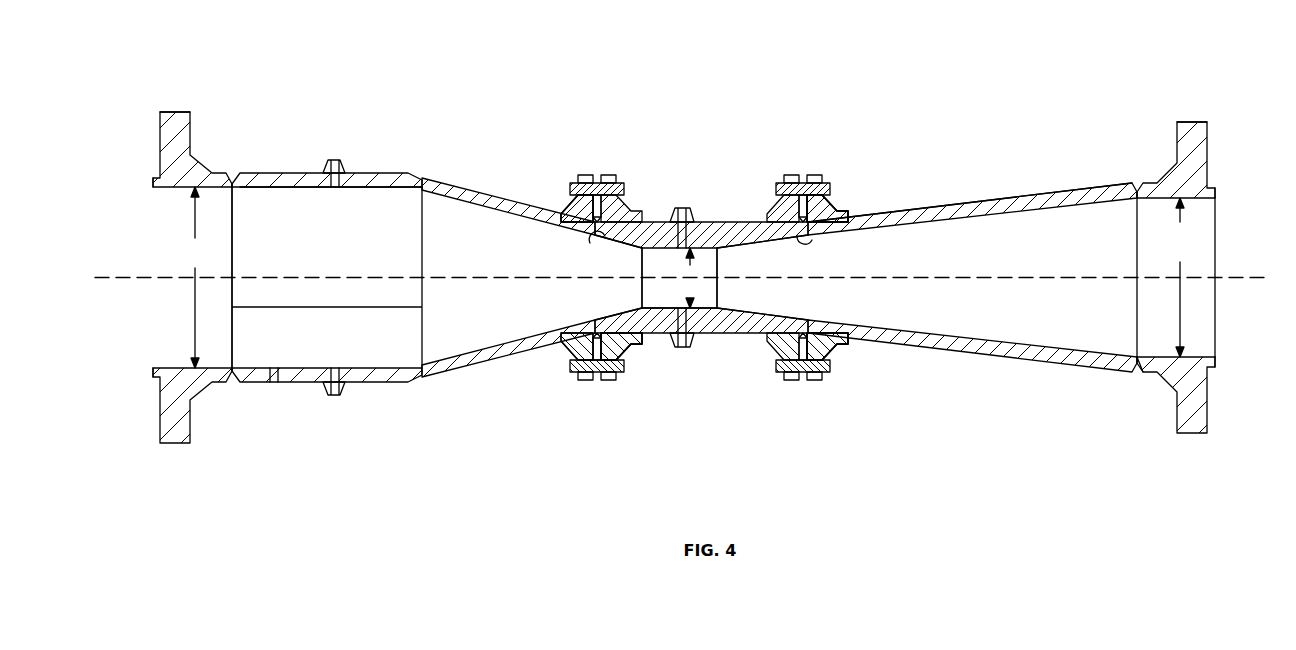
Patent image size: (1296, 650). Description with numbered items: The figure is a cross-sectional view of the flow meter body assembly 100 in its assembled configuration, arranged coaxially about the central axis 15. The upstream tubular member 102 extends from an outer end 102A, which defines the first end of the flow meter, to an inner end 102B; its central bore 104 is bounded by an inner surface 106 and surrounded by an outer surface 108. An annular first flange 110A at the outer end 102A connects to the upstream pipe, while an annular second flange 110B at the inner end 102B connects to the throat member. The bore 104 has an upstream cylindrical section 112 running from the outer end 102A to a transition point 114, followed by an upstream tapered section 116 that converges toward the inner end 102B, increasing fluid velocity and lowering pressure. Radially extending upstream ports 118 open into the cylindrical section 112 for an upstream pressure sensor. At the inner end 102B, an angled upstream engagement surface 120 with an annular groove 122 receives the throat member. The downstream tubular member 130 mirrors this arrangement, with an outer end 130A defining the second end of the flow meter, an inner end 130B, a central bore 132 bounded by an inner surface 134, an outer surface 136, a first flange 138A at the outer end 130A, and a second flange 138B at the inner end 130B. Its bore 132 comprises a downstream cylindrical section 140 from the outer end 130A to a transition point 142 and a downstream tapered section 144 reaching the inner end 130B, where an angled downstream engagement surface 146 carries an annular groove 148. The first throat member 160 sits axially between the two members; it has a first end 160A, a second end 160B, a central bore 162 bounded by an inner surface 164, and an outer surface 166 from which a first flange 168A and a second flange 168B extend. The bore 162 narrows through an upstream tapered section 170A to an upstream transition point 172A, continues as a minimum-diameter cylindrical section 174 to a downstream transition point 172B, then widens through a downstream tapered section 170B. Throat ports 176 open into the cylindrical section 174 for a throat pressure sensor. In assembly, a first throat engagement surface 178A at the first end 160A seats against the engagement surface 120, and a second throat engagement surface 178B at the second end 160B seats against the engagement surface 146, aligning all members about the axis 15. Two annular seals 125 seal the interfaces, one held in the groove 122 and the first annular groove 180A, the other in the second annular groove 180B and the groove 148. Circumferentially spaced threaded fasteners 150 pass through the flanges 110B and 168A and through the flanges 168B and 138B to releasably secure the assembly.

The flow meter body assembly 100 is at (144, 82).
The central axis 15 is at (148, 277).
The upstream tubular member 102 is at (232, 174).
The outer end 102A is at (158, 184).
The inner end 102B is at (576, 210).
The central bore 104 is at (299, 278).
The inner surface 106 is at (250, 190).
The outer surface 108 is at (270, 176).
The first flange 110A is at (178, 120).
The second flange 110B is at (587, 378).
The upstream cylindrical section 112 is at (266, 362).
The transition point 114 is at (480, 297).
The upstream tapered section 116 is at (432, 373).
The upstream ports 118 is at (330, 160).
The upstream engagement surface 120 is at (534, 185).
The annular groove 122 is at (534, 185).
The annular seals 125 is at (590, 243).
The downstream tubular member 130 is at (1100, 186).
The outer end 130A is at (1216, 193).
The inner end 130B is at (845, 212).
The central bore 132 is at (1173, 255).
The inner surface 134 is at (972, 272).
The outer surface 136 is at (1022, 199).
The first flange 138A is at (1190, 122).
The second flange 138B is at (832, 183).
The downstream cylindrical section 140 is at (1205, 339).
The transition point 142 is at (1134, 373).
The downstream tapered section 144 is at (1036, 356).
The downstream engagement surface 146 is at (886, 172).
The annular groove 148 is at (886, 172).
The threaded fasteners 150 is at (594, 176).
The first throat member 160 is at (670, 287).
The first end 160A is at (612, 378).
The second end 160B is at (814, 378).
The central bore 162 is at (755, 273).
The inner surface 164 is at (758, 224).
The outer surface 166 is at (746, 322).
The first flange 168A is at (607, 176).
The second flange 168B is at (797, 176).
The upstream tapered section 170A is at (636, 334).
The downstream tapered section 170B is at (766, 334).
The upstream transition point 172A is at (636, 318).
The downstream transition point 172B is at (718, 306).
The cylindrical section 174 is at (722, 332).
The throat ports 176 is at (680, 213).
The first throat engagement surface 178A is at (653, 382).
The second throat engagement surface 178B is at (861, 382).
The first annular groove 180A is at (653, 382).
The second annular groove 180B is at (861, 382).